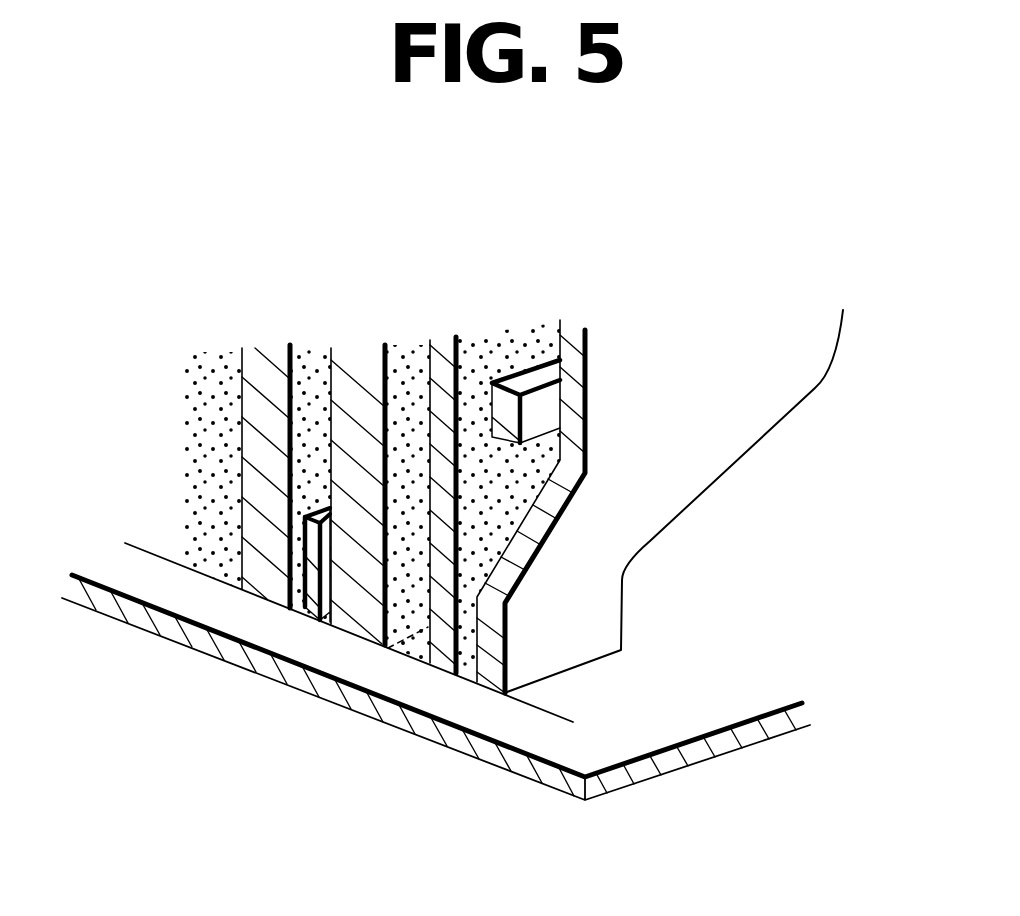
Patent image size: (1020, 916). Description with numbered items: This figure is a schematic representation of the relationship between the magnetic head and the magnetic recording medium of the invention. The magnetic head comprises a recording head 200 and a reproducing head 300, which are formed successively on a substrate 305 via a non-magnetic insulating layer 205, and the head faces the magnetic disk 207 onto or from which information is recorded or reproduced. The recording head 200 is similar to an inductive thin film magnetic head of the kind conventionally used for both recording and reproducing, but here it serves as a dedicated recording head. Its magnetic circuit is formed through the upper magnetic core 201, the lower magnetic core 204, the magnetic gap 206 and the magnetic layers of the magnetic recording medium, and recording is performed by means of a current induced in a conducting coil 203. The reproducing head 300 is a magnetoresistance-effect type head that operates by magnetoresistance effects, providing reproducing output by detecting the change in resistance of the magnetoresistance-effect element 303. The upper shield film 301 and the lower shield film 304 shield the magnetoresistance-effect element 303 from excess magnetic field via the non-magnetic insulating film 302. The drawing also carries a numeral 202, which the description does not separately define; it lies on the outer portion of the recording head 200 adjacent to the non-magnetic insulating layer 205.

The recording head 200 is at (823, 308).
The upper magnetic core 201 is at (678, 462).
The outer wall 202 is at (553, 520).
The conducting coil 203 is at (505, 408).
The lower magnetic core 204 is at (445, 358).
The non-magnetic insulating layer 205 is at (400, 553).
The magnetic gap 206 is at (468, 673).
The magnetic disk 207 is at (533, 725).
The reproducing head 300 is at (389, 300).
The upper shield film 301 is at (357, 385).
The non-magnetic insulating film 302 is at (307, 447).
The magnetoresistance-effect element 303 is at (312, 538).
The lower shield film 304 is at (267, 382).
The substrate 305 is at (183, 543).